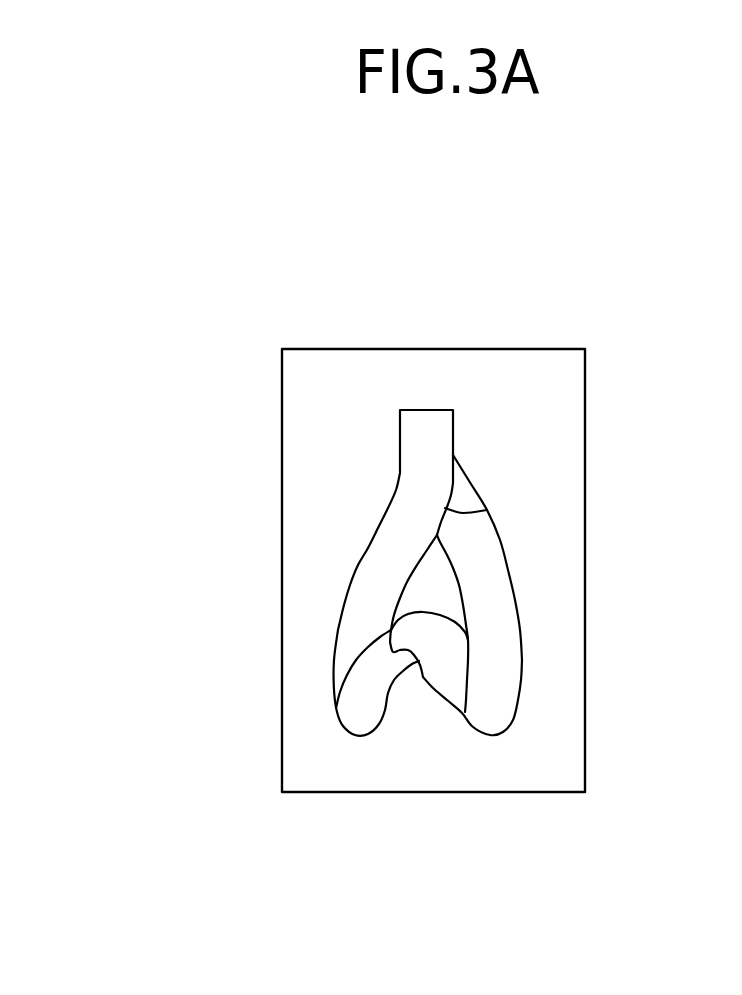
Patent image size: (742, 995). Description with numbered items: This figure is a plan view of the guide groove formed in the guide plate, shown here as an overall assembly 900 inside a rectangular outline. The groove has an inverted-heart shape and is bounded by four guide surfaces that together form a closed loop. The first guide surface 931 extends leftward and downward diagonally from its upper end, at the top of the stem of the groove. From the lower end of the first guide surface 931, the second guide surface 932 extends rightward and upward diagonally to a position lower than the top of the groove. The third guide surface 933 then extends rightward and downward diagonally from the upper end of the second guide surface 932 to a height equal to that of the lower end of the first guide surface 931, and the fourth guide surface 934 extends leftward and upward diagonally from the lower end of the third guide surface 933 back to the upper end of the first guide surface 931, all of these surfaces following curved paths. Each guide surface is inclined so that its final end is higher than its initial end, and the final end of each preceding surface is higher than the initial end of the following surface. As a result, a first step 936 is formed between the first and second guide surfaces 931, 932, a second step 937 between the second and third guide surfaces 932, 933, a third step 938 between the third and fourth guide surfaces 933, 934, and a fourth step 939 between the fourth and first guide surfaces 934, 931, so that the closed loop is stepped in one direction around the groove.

The bifurcated strip fastener 900 is at (248, 428).
The first guide surface 931 is at (380, 565).
The second guide surface 932 is at (373, 697).
The third guide surface 933 is at (452, 673).
The fourth guide surface 934 is at (490, 572).
The first step 936 is at (362, 650).
The second step 937 is at (424, 678).
The third step 938 is at (470, 653).
The fourth step 939 is at (487, 510).